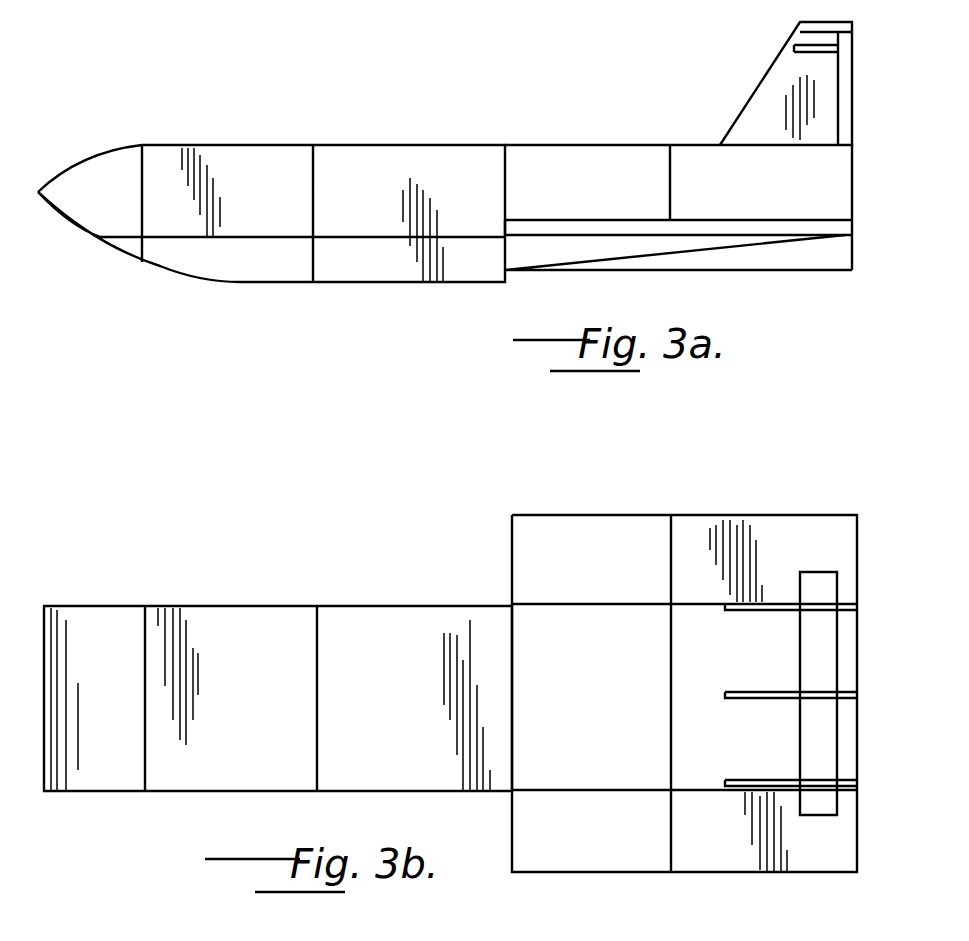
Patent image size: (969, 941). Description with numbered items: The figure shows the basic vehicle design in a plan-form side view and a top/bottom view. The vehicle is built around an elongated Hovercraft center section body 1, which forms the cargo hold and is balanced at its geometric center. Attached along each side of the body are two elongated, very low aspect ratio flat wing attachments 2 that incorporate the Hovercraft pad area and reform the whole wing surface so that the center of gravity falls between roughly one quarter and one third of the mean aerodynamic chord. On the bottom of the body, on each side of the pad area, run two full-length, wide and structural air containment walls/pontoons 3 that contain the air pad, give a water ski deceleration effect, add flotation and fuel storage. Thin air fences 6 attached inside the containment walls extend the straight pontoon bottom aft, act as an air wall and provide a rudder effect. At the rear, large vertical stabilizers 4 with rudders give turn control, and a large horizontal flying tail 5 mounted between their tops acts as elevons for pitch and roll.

In FIG. 3B, the Hovercraft center section body 1 is at (249, 700).
In FIG. 3A, the flat wing attachment 2 is at (388, 145).
In FIG. 3B, the flat wing attachment 2 is at (572, 575).
In FIG. 3A, the air containment wall/pontoon 3 is at (468, 283).
In FIG. 3A, the vertical stabilizer 4 is at (745, 108).
In FIG. 3A, the horizontal flying tail 5 is at (815, 52).
In FIG. 3A, the air fence 6 is at (760, 270).